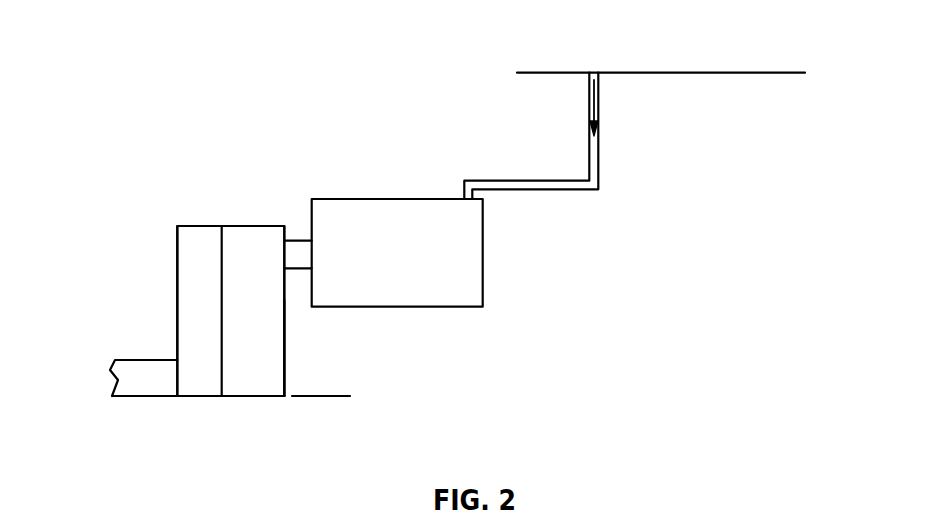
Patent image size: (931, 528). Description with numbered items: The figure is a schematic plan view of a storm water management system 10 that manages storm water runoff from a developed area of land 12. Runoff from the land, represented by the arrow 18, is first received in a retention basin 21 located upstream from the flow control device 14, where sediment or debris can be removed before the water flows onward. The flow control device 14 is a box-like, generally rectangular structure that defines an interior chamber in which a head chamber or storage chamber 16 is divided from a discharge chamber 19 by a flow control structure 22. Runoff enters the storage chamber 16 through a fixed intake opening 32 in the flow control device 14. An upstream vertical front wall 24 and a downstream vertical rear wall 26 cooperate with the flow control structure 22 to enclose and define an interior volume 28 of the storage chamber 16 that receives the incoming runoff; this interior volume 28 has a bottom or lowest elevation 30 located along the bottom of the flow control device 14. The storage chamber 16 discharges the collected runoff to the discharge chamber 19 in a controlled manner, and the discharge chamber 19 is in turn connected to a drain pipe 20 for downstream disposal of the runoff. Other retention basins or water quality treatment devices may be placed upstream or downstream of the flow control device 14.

The storm water management system 10 is at (110, 131).
The developed area of land 12 is at (722, 73).
The flow control device 14 is at (162, 242).
The storage chamber 16 is at (272, 380).
The arrow 18 is at (598, 107).
The discharge chamber 19 is at (197, 382).
The drain pipe 20 is at (128, 358).
The retention basin 21 is at (483, 243).
The flow control structure 22 is at (231, 249).
The upstream vertical front wall 24 is at (284, 343).
The downstream vertical rear wall 26 is at (177, 293).
The interior volume 28 is at (243, 375).
The lowest elevation 30 is at (332, 398).
The fixed intake opening 32 is at (284, 252).